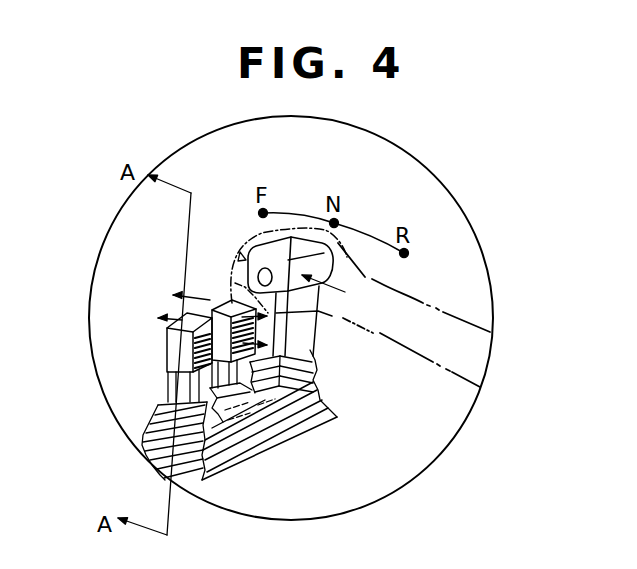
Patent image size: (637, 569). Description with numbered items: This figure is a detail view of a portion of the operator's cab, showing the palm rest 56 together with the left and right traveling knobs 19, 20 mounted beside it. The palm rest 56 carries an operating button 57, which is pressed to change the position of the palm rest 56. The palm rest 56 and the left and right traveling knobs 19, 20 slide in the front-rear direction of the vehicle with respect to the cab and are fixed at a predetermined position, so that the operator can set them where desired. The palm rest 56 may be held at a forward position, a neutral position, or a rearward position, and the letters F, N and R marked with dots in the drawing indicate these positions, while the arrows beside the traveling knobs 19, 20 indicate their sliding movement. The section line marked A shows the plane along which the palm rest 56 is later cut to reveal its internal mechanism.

The left traveling knob 19 is at (176, 342).
The right traveling knob 20 is at (225, 312).
The palm rest 56 is at (334, 262).
The operating button 57 is at (258, 279).